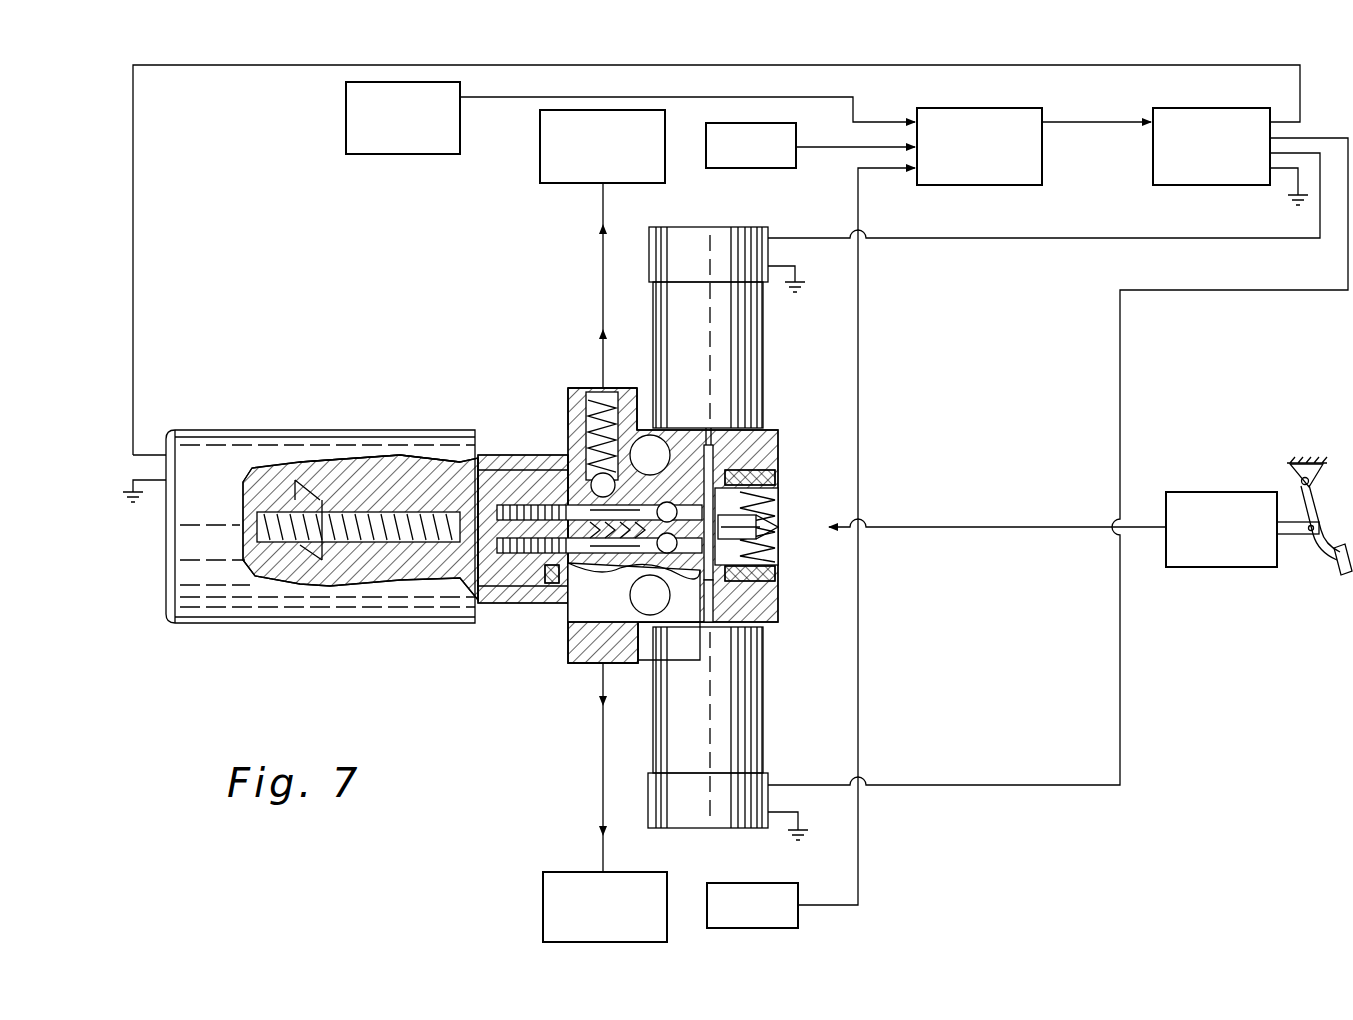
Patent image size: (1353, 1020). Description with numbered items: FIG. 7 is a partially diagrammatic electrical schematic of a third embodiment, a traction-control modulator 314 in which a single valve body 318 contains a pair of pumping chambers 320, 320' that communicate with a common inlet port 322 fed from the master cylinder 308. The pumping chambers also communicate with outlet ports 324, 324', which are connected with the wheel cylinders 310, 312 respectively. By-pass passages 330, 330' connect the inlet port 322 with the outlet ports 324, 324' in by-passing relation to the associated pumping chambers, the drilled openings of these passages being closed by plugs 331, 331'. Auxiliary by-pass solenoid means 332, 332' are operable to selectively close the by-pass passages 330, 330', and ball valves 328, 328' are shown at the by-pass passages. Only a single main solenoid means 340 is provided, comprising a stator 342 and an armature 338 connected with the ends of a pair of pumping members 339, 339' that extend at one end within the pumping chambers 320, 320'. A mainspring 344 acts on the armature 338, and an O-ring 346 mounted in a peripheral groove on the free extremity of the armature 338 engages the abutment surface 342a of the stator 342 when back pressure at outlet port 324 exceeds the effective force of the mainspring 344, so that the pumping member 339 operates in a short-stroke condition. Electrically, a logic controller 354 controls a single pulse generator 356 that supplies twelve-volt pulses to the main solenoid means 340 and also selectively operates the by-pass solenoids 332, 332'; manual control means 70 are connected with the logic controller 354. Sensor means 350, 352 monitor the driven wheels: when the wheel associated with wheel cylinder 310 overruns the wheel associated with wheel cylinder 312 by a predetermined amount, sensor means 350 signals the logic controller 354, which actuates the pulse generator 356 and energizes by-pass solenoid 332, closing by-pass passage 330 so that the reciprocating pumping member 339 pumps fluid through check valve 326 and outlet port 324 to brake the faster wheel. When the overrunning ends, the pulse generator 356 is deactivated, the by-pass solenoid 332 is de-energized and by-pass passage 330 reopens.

The manual control means 70 is at (428, 154).
The master cylinder 308 is at (1212, 567).
The wheel cylinder 310 is at (553, 183).
The wheel cylinder 312 is at (543, 893).
The brake control valve assembly 314 is at (470, 302).
The valve body 318 is at (778, 435).
The pumping chamber 320 is at (596, 510).
The pumping chamber 320' is at (637, 558).
The inlet port 322 is at (770, 515).
The outlet port 324 is at (567, 408).
The outlet port 324' is at (586, 663).
The check valve 326 is at (568, 425).
The ball valve 328 is at (630, 466).
The ball valve 328' is at (629, 589).
The by-pass passage 330 is at (691, 476).
The by-pass passage 330' is at (712, 601).
The plug 331 is at (780, 462).
The plug 331' is at (783, 588).
The auxiliary by-pass solenoid means 332 is at (738, 327).
The auxiliary by-pass solenoid means 332' is at (737, 727).
The armature 338 is at (395, 560).
The pumping member 339 is at (575, 501).
The pumping member 339' is at (571, 552).
The main solenoid means 340 is at (372, 432).
The stator 342 is at (432, 447).
The abutment surface 342a is at (520, 468).
The mainspring 344 is at (340, 545).
The O-ring 346 is at (552, 600).
The sensor means 350 is at (728, 168).
The sensor 352 is at (798, 912).
The logic controller 354 is at (978, 185).
The pulse generator 356 is at (1185, 185).